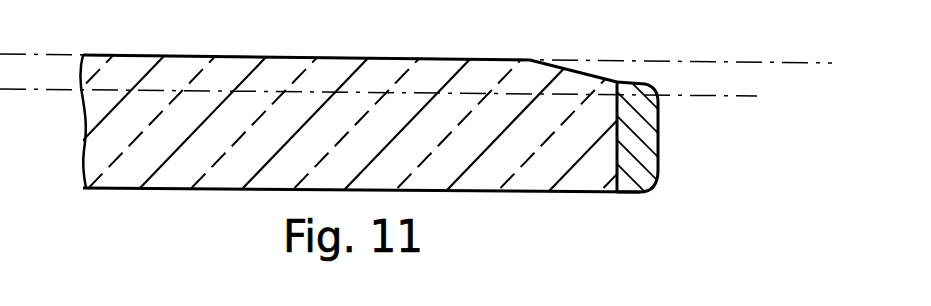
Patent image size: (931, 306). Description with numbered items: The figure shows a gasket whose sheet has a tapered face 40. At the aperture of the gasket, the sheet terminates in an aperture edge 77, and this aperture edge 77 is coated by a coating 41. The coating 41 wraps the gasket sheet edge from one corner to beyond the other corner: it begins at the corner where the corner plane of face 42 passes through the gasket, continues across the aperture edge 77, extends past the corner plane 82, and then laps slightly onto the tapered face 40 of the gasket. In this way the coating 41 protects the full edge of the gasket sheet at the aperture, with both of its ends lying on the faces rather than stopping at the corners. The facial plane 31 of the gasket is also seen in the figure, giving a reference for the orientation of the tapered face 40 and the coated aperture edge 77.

The tapered face 40 is at (326, 57).
The coating 41 is at (659, 127).
The face 42 is at (217, 190).
The aperture edge 77 is at (617, 150).
The facial plane 31 is at (820, 63).
The corner plane 82 is at (744, 97).